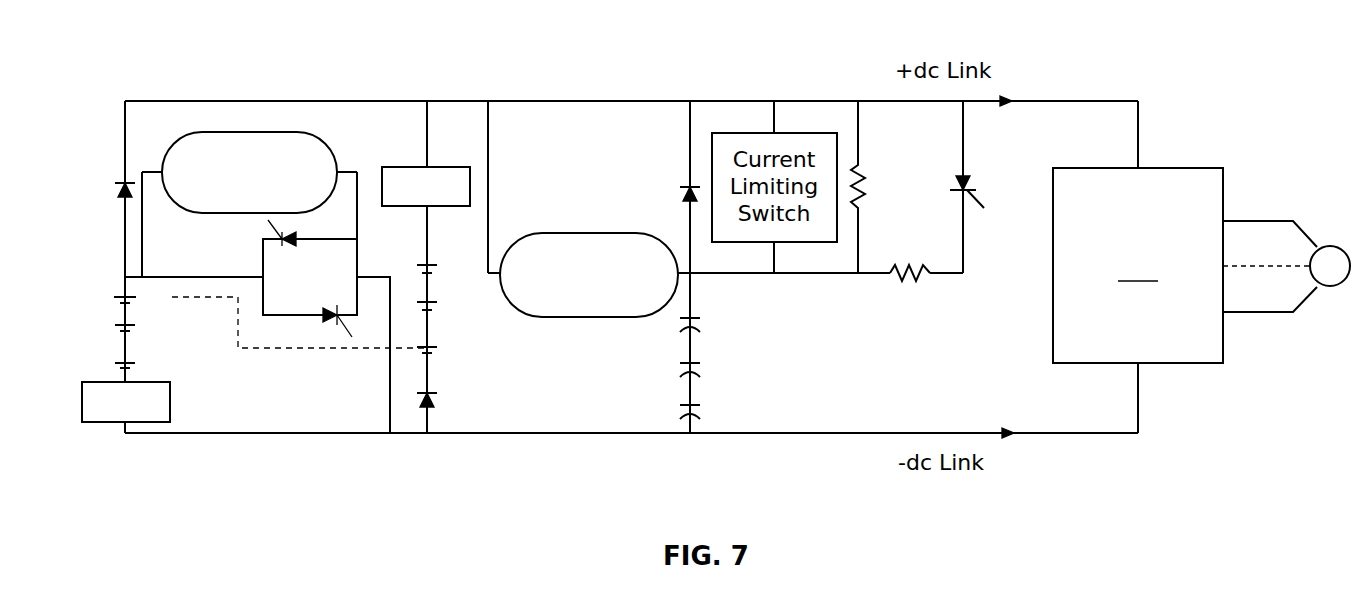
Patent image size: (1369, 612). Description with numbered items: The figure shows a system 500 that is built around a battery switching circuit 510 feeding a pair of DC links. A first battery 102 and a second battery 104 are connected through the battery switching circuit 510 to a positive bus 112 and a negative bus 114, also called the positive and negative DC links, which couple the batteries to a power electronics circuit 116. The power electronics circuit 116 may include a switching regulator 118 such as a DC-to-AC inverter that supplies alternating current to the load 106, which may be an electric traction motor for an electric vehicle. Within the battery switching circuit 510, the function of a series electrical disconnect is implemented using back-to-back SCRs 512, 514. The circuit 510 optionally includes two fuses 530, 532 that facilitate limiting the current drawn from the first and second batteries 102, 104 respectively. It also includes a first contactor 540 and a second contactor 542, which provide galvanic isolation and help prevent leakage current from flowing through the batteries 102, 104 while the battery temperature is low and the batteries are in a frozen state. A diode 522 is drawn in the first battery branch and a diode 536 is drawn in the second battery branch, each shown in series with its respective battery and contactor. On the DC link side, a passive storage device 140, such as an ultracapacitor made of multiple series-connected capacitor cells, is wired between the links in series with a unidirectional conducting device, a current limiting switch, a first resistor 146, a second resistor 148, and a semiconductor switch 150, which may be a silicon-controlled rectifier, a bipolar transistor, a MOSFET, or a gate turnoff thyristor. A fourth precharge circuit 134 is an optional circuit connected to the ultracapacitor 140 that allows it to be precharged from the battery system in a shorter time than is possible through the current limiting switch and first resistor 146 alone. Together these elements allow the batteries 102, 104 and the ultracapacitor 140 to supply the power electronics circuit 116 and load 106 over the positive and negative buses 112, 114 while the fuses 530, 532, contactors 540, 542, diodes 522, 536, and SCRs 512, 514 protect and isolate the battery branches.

The system 500 is at (1045, 78).
The battery switching circuit 510 is at (343, 84).
The fuse 532 is at (405, 167).
The positive bus 112 is at (583, 101).
The diode 522 is at (122, 182).
The first contactor 540 is at (124, 295).
The first battery 102 is at (110, 349).
The fuse 530 is at (100, 422).
The SCR 512 is at (280, 243).
The SCR 514 is at (325, 320).
The second battery 104 is at (440, 278).
The second contactor 542 is at (433, 340).
The diode 536 is at (433, 392).
The fourth precharge circuit 134 is at (580, 233).
The passive storage device 140 is at (665, 372).
The first resistor 146 is at (865, 182).
The second resistor 148 is at (910, 285).
The semiconductor switch 150 is at (972, 188).
The power electronics circuit 116 is at (1178, 168).
The switching regulator 118 is at (1138, 267).
The load 106 is at (1330, 246).
The negative bus 114 is at (760, 433).